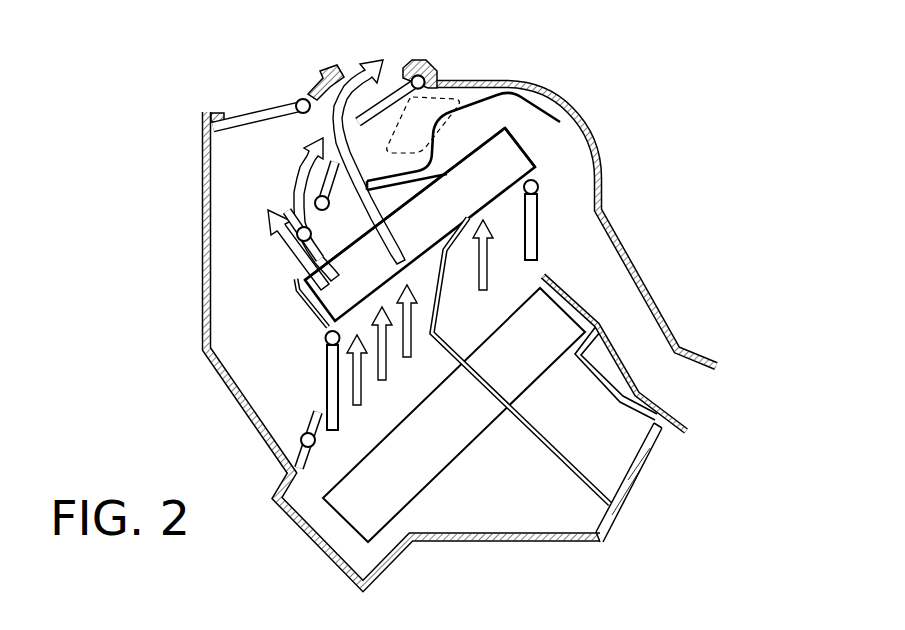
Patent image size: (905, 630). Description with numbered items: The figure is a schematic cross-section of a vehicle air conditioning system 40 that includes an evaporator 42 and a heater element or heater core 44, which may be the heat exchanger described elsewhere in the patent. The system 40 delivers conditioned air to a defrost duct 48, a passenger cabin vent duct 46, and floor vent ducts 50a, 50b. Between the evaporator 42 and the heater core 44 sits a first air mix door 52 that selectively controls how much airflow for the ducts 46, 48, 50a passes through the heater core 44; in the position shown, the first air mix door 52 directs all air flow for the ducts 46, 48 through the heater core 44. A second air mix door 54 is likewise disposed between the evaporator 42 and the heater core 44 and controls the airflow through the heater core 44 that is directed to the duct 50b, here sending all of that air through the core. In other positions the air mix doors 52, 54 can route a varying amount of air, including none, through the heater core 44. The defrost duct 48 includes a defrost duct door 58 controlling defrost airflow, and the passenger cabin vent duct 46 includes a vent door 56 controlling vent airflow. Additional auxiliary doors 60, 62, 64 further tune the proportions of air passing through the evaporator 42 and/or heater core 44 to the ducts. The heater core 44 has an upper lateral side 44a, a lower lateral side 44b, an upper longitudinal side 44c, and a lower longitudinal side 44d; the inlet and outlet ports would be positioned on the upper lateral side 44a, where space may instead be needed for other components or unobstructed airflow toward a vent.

The vehicle air conditioning system 40 is at (180, 326).
The evaporator 42 is at (326, 513).
The heater core 44 is at (546, 148).
The upper lateral side 44a is at (513, 138).
The lower lateral side 44b is at (317, 311).
The upper longitudinal side 44c is at (388, 213).
The lower longitudinal side 44d is at (419, 259).
The passenger cabin vent duct 46 is at (228, 113).
The defrost duct 48 is at (399, 66).
The floor vent duct 50a is at (443, 83).
The floor vent duct 50b is at (693, 393).
The first air mix door 52 is at (333, 381).
The second air mix door 54 is at (537, 223).
The vent door 56 is at (271, 107).
The defrost duct door 58 is at (393, 88).
The auxiliary door 60 is at (307, 423).
The auxiliary door 62 is at (297, 215).
The auxiliary door 64 is at (323, 171).